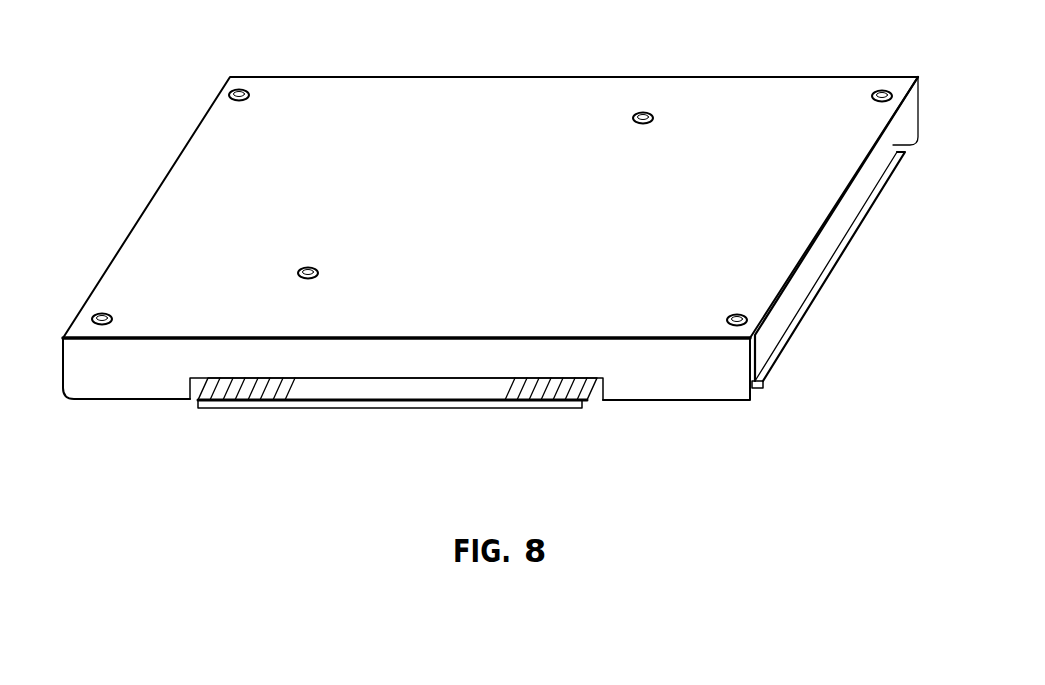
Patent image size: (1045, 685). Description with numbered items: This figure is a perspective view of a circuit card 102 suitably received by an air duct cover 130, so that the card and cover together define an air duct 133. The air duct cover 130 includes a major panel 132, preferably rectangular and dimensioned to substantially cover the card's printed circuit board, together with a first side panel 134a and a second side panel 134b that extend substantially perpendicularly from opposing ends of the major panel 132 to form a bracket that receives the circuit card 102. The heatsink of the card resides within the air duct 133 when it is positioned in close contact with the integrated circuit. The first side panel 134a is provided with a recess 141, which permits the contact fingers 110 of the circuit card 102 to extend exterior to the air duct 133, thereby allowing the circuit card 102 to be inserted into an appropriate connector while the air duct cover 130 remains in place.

The air duct cover 130 is at (505, 253).
The major panel 132 is at (630, 229).
The air duct 133 is at (858, 195).
The first side panel 134a is at (720, 372).
The second side panel 134b is at (898, 127).
The circuit card 102 is at (825, 262).
The recess 141 is at (202, 383).
The contact fingers 110 is at (507, 408).